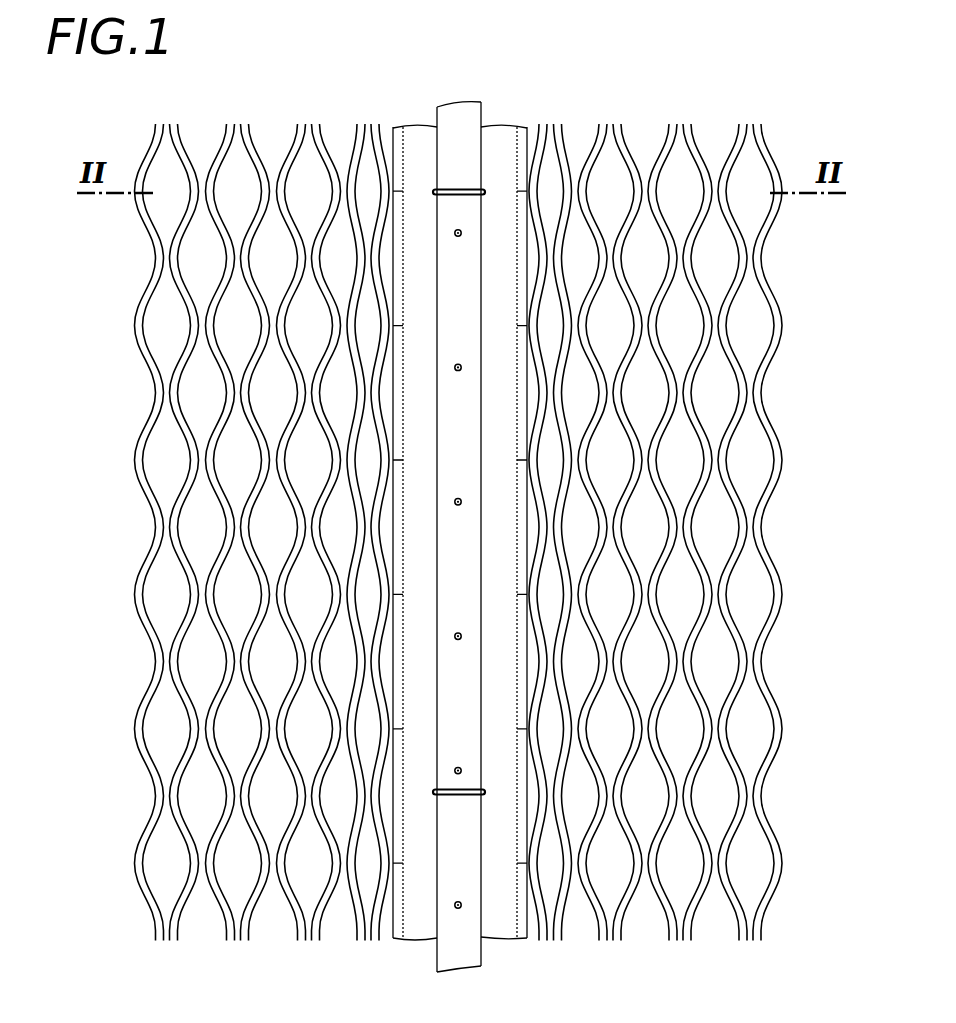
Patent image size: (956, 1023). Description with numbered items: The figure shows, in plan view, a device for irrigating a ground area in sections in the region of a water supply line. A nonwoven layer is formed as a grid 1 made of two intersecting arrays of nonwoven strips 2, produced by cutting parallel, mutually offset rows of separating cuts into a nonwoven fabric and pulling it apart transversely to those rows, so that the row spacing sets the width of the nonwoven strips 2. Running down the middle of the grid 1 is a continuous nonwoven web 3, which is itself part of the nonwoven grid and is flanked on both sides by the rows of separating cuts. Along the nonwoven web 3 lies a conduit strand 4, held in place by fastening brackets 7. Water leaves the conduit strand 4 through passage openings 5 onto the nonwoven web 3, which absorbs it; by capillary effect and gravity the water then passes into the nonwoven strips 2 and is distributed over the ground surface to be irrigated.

The grid 1 is at (122, 787).
The nonwoven strips 2 is at (182, 430).
The nonwoven web 3 is at (420, 148).
The conduit strand 4 is at (467, 280).
The passage openings 5 is at (461, 767).
The fastening brackets 7 is at (463, 189).